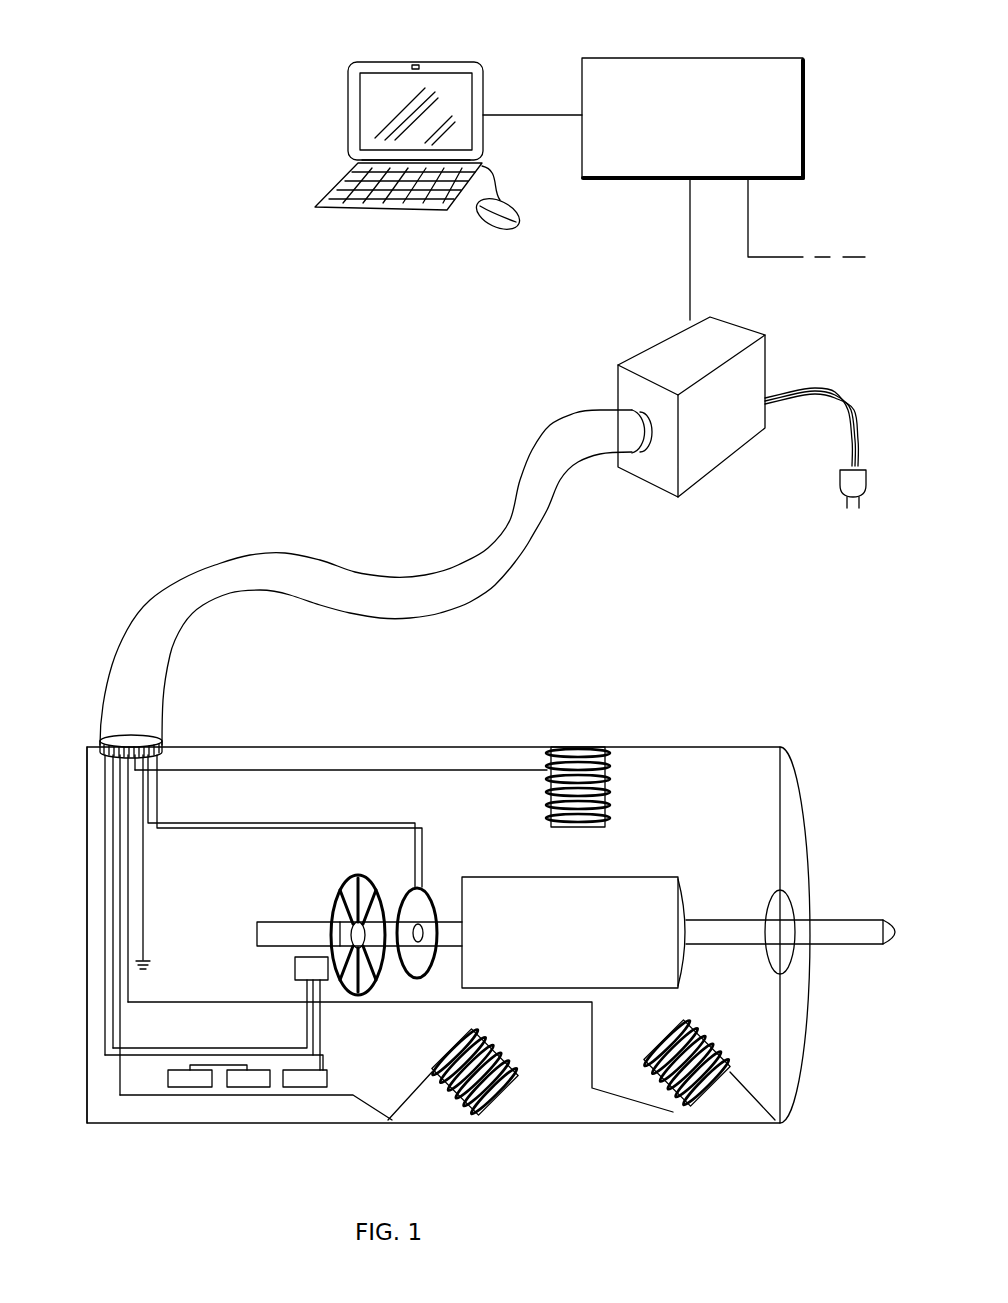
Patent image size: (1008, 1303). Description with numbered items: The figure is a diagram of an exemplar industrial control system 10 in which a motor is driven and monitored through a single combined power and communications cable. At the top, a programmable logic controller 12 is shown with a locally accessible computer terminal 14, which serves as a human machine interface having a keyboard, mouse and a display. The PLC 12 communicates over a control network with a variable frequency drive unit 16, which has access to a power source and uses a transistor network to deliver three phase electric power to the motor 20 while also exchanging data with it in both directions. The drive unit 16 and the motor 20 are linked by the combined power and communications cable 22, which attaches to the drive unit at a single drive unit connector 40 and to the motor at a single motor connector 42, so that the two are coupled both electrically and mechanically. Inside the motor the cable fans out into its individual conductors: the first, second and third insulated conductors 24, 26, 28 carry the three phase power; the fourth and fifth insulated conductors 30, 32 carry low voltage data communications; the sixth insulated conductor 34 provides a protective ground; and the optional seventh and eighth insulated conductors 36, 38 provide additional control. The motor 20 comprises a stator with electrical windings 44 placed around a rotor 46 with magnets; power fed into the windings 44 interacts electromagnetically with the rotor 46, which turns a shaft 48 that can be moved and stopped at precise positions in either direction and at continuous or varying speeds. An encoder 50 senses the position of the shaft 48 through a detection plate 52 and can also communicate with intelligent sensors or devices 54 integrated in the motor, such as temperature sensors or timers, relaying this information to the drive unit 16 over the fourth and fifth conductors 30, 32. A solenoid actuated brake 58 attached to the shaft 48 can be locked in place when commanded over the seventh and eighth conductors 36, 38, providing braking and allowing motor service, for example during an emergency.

The industrial control system 10 is at (145, 118).
The programmable logic controller 12 is at (706, 135).
The computer terminal 14 is at (487, 82).
The drive unit 16 is at (768, 370).
The motor 20 is at (478, 719).
The combined power and communications cable 22 is at (590, 428).
The first insulated conductor 24 is at (105, 763).
The second insulated conductor 26 is at (113, 790).
The third insulated conductor 28 is at (194, 755).
The fourth insulated conductor 30 is at (120, 842).
The fifth insulated conductor 32 is at (128, 883).
The sixth insulated conductor 34 is at (143, 932).
The seventh insulated conductor 36 is at (157, 792).
The eighth insulated conductor 38 is at (148, 800).
The drive unit connector 40 is at (666, 470).
The motor connector 42 is at (100, 746).
The electrical windings 44 is at (613, 798).
The rotor 46 is at (578, 942).
The shaft 48 is at (843, 915).
The encoder 50 is at (257, 935).
The detection plate 52 is at (333, 922).
The intelligent sensors or devices 54 is at (305, 1087).
The solenoid actuated brake 58 is at (427, 900).